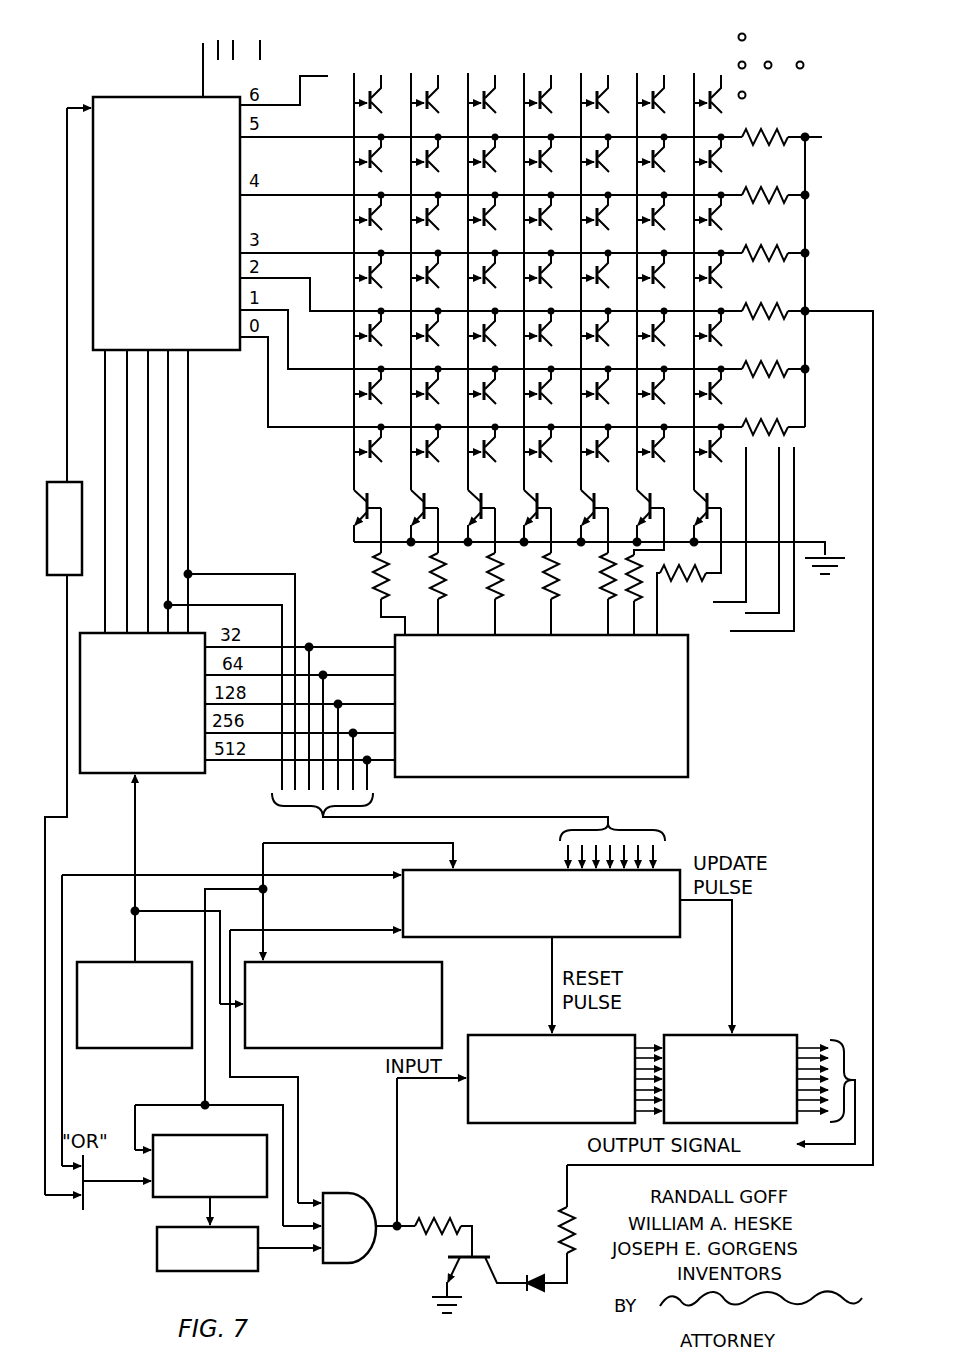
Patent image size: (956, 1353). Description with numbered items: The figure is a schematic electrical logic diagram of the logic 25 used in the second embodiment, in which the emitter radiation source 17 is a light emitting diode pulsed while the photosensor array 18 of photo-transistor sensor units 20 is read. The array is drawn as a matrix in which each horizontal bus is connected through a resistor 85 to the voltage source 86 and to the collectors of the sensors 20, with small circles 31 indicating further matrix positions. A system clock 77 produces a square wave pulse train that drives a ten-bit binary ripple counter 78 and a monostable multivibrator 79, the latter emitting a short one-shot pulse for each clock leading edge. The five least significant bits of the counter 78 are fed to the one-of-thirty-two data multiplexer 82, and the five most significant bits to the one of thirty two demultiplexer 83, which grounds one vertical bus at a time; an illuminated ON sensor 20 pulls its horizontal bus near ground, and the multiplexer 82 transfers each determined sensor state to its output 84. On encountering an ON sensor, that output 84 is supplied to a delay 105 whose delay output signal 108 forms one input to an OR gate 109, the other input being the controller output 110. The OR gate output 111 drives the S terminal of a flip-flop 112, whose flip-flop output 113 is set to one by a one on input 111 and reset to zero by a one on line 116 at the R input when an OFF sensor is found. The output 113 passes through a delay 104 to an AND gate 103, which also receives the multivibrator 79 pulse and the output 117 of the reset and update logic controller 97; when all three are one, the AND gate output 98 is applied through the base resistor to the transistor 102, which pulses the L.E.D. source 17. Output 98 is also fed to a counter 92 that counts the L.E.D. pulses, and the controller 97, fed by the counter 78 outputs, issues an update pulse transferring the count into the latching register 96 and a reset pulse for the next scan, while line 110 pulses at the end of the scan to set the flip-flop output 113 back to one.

The one-of-32 data multiplexer 82 is at (133, 97).
The multiplexer output 84 is at (67, 124).
The sensor unit 20 is at (492, 96).
The photosensor array 18 is at (656, 84).
The additional matrix positions 31 is at (746, 37).
The resistor 85 is at (766, 133).
The voltage source 86 is at (832, 140).
The logic 25 is at (597, 597).
The delay 105 is at (57, 481).
The delay output signal 108 is at (62, 810).
The one of thirty two demultiplexer 83 is at (541, 706).
The binary ripple counter 78 is at (155, 774).
The controller output 110 is at (100, 873).
The output of update logic controller 117 is at (305, 929).
The reset and update logic controller 97 is at (660, 930).
The system clock 77 is at (152, 962).
The monostable multivibrator 79 is at (444, 980).
The counter 92 is at (485, 1110).
The latching register 96 is at (758, 1035).
The line 116 is at (145, 1105).
The flip-flop 112 is at (212, 1141).
The OR gate output 111 is at (143, 1180).
The OR gate 109 is at (83, 1204).
The flip-flop output 113 is at (205, 1205).
The delay 104 is at (157, 1250).
The AND gate 103 is at (330, 1200).
The AND gate output 98 is at (386, 1234).
The transistor 102 is at (470, 1270).
The emitter radiation source 17 is at (530, 1287).